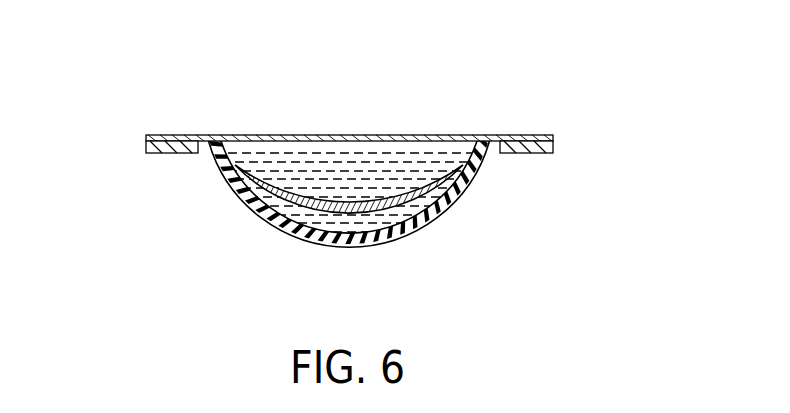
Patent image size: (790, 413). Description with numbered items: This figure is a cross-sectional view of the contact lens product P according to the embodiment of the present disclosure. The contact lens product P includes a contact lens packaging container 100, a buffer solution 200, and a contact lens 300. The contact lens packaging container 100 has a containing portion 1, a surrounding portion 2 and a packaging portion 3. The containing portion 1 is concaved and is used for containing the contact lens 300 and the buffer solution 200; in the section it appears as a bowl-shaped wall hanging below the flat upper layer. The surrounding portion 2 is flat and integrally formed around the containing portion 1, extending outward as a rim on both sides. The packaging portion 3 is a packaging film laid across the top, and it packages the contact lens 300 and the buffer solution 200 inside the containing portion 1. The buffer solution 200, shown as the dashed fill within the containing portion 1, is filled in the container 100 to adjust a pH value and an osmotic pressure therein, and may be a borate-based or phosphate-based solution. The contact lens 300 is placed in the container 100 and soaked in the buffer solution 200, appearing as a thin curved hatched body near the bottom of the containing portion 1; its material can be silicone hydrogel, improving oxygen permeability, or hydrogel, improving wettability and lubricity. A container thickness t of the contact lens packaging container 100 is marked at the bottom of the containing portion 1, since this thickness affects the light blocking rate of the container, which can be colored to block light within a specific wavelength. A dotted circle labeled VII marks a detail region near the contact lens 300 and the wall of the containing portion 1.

The contact lens product P is at (138, 66).
The contact lens packaging container 100 is at (593, 100).
The containing portion 1 is at (476, 196).
The surrounding portion 2 is at (547, 153).
The packaging portion 3 is at (547, 137).
The buffer solution 200 is at (318, 166).
The contact lens 300 is at (267, 206).
The container thickness t is at (350, 183).
The detail view marker VII is at (424, 226).